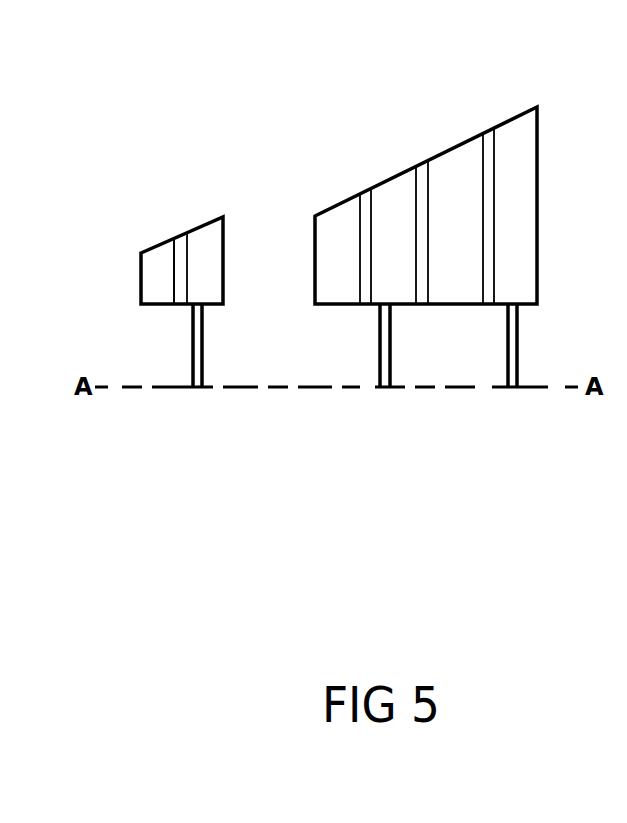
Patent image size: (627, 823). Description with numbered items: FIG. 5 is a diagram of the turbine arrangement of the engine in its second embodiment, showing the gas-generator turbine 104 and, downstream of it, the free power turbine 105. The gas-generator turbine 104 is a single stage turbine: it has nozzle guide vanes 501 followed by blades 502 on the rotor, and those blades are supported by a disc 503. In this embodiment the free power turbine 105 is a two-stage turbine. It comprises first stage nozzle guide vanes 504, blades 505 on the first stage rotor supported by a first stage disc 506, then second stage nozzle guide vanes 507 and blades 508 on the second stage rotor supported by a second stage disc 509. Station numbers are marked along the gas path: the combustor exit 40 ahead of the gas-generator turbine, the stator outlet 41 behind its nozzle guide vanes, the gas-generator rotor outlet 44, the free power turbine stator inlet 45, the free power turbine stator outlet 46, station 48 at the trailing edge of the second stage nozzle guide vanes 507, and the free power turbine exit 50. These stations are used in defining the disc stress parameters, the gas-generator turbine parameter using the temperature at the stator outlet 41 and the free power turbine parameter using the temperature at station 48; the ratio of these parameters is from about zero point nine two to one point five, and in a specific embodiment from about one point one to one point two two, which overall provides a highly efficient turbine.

The gas-generator turbine 104 is at (153, 170).
The free power turbine 105 is at (456, 75).
The nozzle guide vanes 501 is at (148, 253).
The blades 502 is at (210, 242).
The disc 503 is at (190, 380).
The first stage nozzle guide vanes 504 is at (337, 212).
The blades 505 is at (392, 187).
The first stage disc 506 is at (378, 380).
The second stage nozzle guide vanes 507 is at (455, 155).
The blades 508 is at (530, 138).
The second stage disc 509 is at (505, 380).
The combustor exit 40 is at (137, 322).
The stator outlet 41 is at (172, 322).
The gas-generator rotor outlet 44 is at (225, 322).
The free power turbine stator inlet 45 is at (315, 322).
The free power turbine stator outlet 46 is at (358, 322).
The station at trailing edge of second stage nozzle guide vanes 48 is at (482, 322).
The free power turbine exit 50 is at (538, 322).